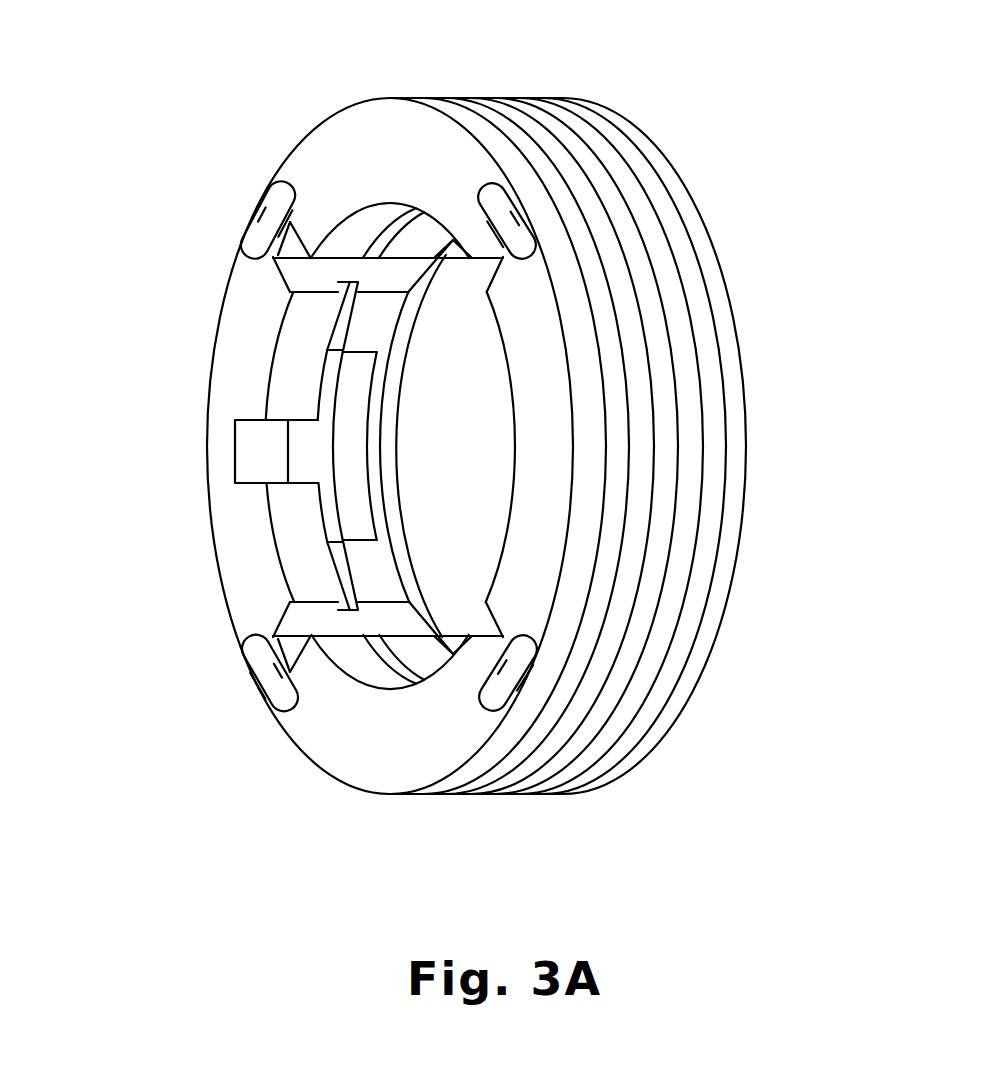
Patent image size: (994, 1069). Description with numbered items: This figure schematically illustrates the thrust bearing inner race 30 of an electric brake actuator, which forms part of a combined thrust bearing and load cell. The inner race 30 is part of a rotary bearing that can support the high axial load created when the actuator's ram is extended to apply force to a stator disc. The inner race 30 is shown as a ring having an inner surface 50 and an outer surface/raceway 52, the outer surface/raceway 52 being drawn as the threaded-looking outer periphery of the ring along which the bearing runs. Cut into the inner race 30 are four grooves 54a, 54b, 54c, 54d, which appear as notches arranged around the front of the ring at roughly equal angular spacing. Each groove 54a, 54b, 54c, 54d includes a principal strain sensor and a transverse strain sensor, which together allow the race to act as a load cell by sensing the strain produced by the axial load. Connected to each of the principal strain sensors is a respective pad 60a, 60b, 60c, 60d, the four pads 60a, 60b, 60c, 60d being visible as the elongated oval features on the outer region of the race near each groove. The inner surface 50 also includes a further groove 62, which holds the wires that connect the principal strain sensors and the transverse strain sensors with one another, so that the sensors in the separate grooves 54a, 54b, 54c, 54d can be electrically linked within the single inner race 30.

The thrust bearing inner race 30 is at (366, 140).
The inner surface 50 is at (305, 558).
The outer surface/raceway 52 is at (612, 142).
The groove 54a is at (296, 271).
The groove 54b is at (506, 270).
The groove 54c is at (476, 655).
The groove 54d is at (281, 626).
The pad 60a is at (268, 217).
The pad 60b is at (500, 210).
The pad 60c is at (515, 700).
The pad 60d is at (258, 685).
The groove 62 is at (342, 328).